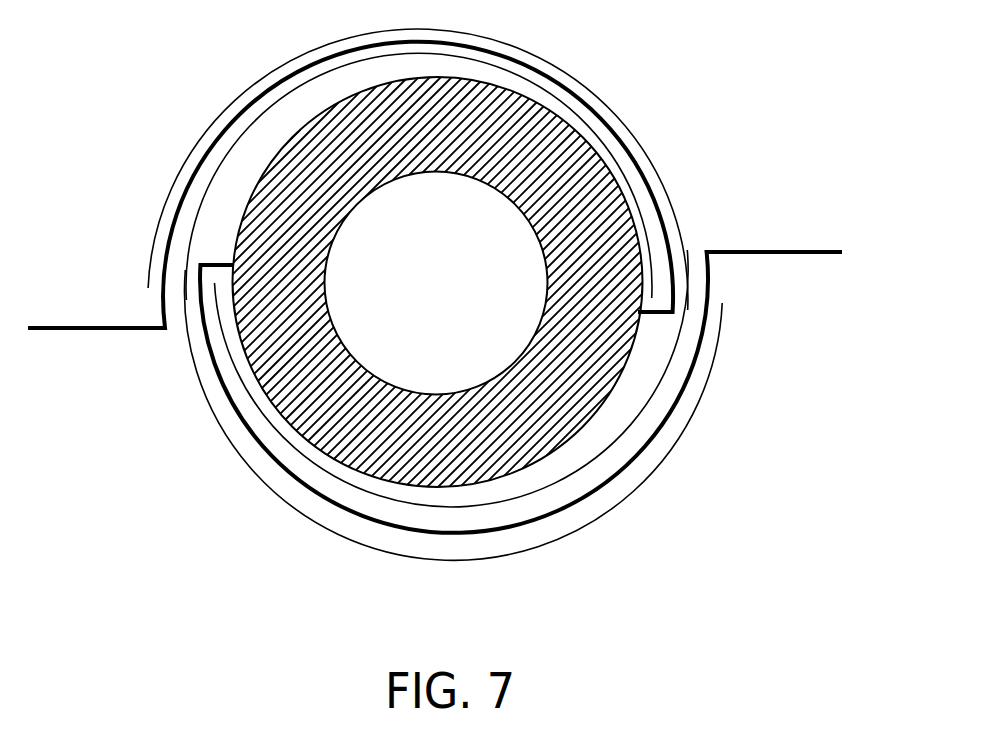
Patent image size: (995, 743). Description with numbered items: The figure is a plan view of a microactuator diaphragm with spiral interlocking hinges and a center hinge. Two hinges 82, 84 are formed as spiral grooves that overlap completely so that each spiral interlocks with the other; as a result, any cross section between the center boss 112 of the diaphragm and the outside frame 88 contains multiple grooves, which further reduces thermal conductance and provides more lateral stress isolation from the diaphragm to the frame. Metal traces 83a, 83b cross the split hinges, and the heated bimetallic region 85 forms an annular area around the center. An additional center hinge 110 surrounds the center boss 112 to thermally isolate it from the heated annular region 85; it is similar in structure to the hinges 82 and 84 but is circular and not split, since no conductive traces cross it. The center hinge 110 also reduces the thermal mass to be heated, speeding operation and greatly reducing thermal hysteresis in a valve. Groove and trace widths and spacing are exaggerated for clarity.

The hinge 82 is at (553, 98).
The hinge 84 is at (634, 146).
The heated bimetallic region 85 is at (628, 210).
The center hinge 110 is at (333, 323).
The center boss 112 is at (436, 329).
The outside frame 88 is at (774, 350).
The metal trace 83a is at (641, 455).
The metal trace 83b is at (365, 213).